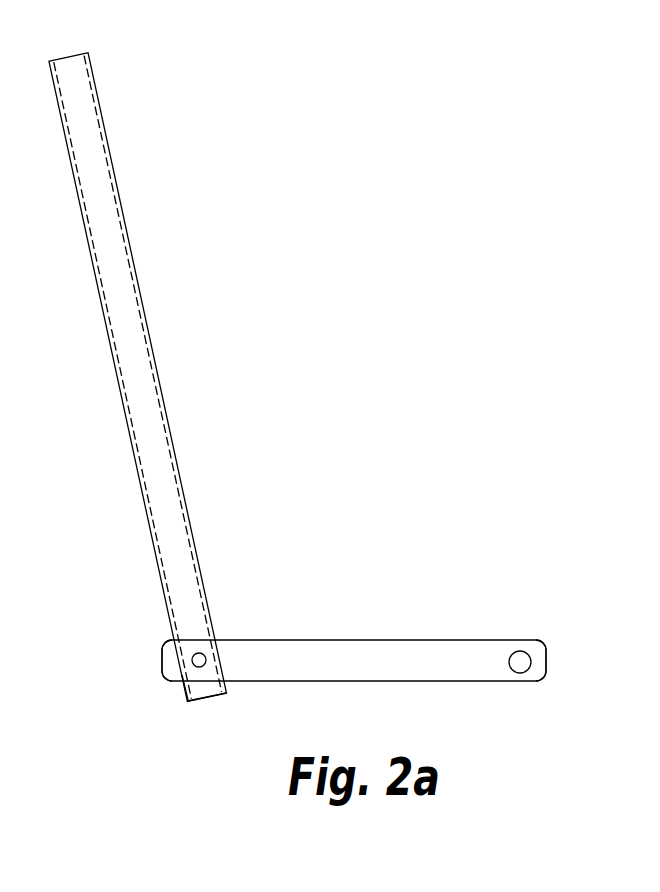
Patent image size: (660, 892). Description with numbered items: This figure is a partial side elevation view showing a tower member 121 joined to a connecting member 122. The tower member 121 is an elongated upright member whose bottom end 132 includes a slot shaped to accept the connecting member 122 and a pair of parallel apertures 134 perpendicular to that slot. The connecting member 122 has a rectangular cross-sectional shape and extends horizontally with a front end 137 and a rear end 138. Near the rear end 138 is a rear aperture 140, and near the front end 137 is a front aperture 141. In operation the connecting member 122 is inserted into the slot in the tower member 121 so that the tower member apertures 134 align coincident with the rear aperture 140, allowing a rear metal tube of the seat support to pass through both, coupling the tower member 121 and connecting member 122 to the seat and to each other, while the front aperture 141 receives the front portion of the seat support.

The tower member 121 is at (110, 272).
The connecting member 122 is at (401, 648).
The bottom end 132 is at (210, 698).
The apertures 134 is at (185, 667).
The front end 137 is at (538, 663).
The rear end 138 is at (167, 657).
The rear aperture 140 is at (199, 652).
The front aperture 141 is at (514, 648).